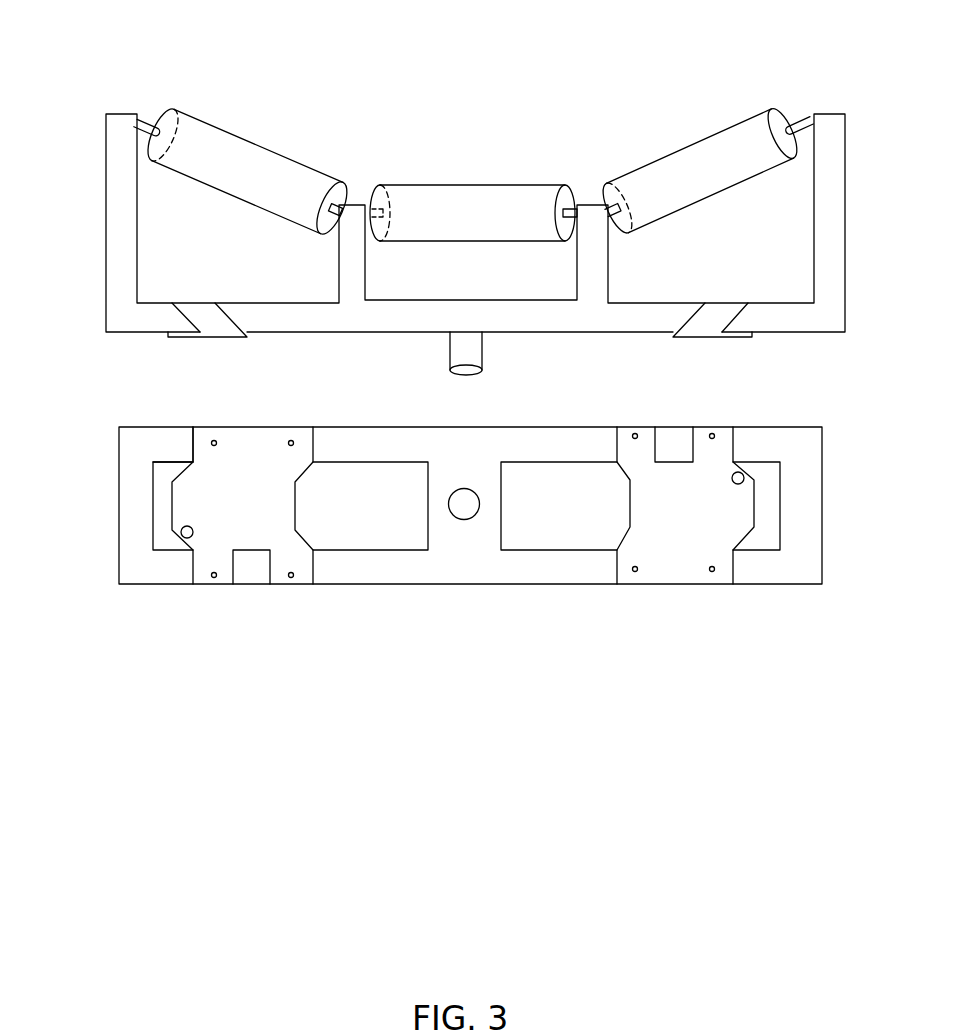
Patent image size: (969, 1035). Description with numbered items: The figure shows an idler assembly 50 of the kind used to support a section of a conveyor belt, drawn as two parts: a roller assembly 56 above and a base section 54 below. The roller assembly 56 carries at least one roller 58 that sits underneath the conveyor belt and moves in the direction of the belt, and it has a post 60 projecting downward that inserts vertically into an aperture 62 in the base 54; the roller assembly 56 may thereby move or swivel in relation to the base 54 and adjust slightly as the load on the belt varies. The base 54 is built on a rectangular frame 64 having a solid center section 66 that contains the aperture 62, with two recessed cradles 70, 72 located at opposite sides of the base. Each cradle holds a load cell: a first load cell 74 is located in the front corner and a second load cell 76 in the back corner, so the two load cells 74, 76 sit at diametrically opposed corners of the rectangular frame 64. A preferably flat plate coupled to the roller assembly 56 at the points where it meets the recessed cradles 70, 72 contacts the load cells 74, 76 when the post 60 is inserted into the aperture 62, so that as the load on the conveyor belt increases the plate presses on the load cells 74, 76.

The idler assembly 50 is at (94, 387).
The base section 54 is at (606, 634).
The roller assembly 56 is at (331, 74).
The roller 58 is at (470, 185).
The post 60 is at (482, 352).
The aperture 62 is at (467, 504).
The rectangular frame 64 is at (470, 575).
The solid center section 66 is at (438, 480).
The recessed cradle 70 is at (277, 503).
The recessed cradle 72 is at (645, 525).
The first load cell 74 is at (186, 539).
The second load cell 76 is at (742, 470).